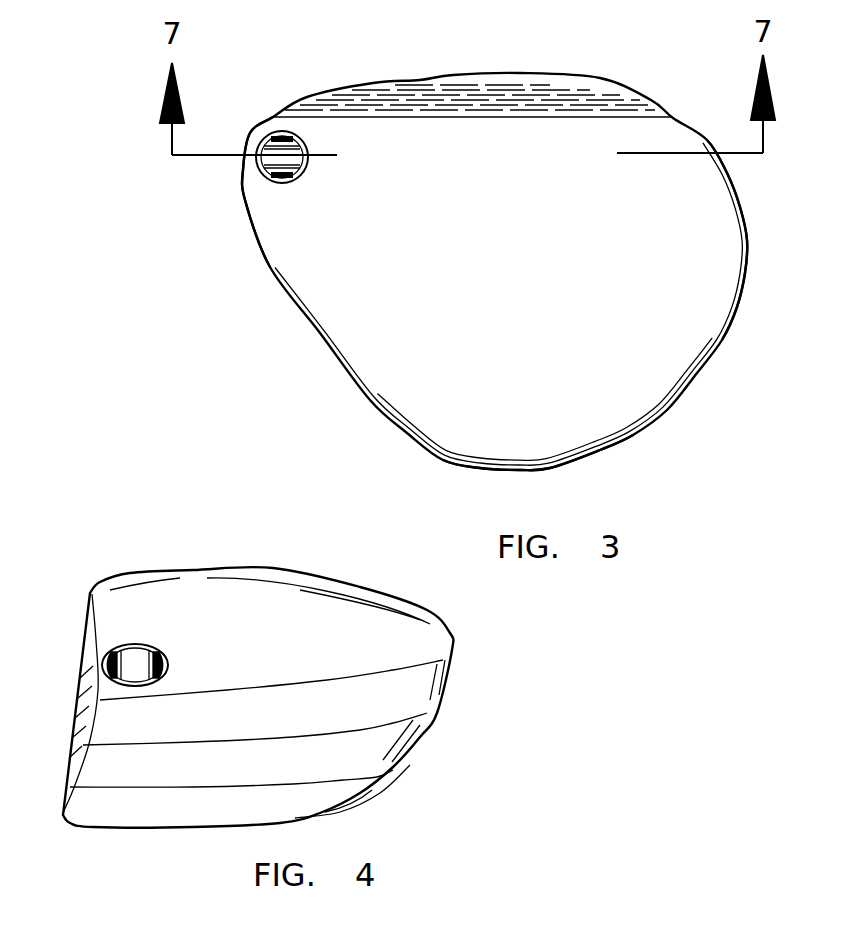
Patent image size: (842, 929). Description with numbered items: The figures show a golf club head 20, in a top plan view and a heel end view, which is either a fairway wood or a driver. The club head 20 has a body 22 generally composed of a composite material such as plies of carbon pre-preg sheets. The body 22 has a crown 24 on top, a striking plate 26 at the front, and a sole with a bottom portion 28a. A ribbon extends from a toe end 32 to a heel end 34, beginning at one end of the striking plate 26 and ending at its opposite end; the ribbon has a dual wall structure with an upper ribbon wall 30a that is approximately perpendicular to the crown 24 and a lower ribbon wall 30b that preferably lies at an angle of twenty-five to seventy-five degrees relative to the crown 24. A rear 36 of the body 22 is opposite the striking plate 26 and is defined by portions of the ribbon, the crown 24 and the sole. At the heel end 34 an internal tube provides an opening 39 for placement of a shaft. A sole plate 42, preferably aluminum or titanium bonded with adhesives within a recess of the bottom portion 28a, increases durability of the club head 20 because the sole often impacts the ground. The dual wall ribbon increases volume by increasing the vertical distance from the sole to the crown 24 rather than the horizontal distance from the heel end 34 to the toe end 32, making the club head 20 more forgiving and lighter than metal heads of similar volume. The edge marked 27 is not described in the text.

In FIG. 3, the golf club head 20 is at (222, 318).
In FIG. 4, the golf club head 20 is at (147, 538).
In FIG. 3, the body 22 is at (747, 285).
In FIG. 3, the crown 24 is at (640, 317).
In FIG. 4, the crown 24 is at (327, 607).
In FIG. 3, the striking plate 26 is at (487, 82).
In FIG. 4, the striking plate 26 is at (82, 690).
In FIG. 3, the top edge of face 27 is at (673, 115).
In FIG. 4, the bottom portion 28a is at (398, 803).
In FIG. 4, the upper ribbon wall 30a is at (445, 683).
In FIG. 4, the lower ribbon wall 30b is at (415, 750).
In FIG. 3, the toe end 32 is at (778, 214).
In FIG. 3, the heel end 34 is at (222, 222).
In FIG. 3, the rear 36 is at (554, 488).
In FIG. 4, the rear 36 is at (469, 630).
In FIG. 3, the opening 39 is at (266, 163).
In FIG. 4, the opening 39 is at (137, 663).
In FIG. 4, the sole plate 42 is at (300, 820).